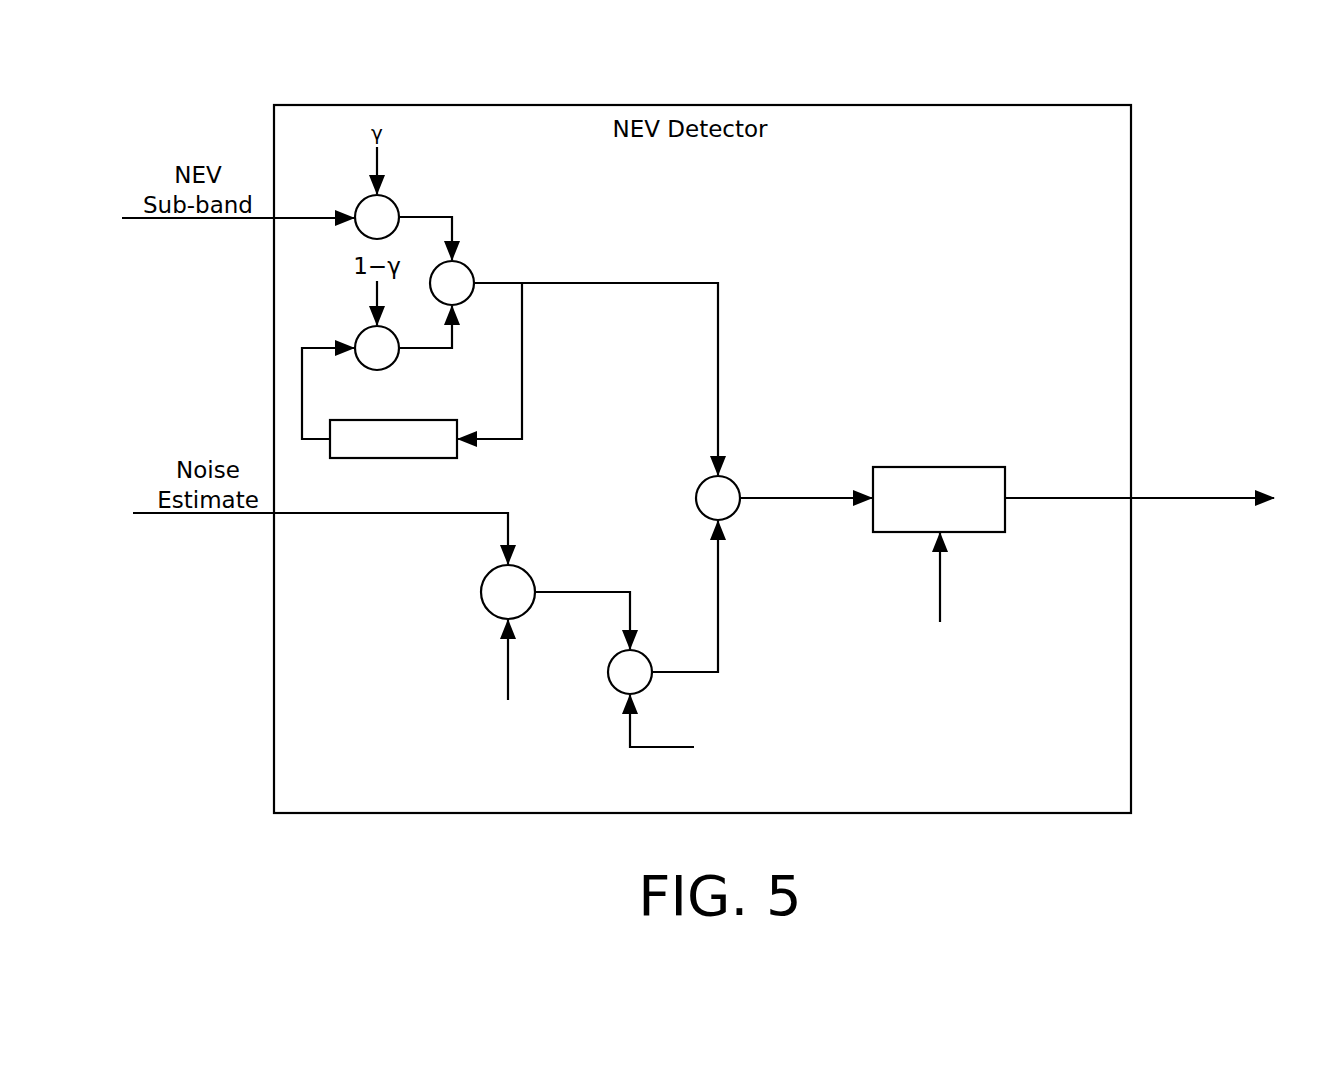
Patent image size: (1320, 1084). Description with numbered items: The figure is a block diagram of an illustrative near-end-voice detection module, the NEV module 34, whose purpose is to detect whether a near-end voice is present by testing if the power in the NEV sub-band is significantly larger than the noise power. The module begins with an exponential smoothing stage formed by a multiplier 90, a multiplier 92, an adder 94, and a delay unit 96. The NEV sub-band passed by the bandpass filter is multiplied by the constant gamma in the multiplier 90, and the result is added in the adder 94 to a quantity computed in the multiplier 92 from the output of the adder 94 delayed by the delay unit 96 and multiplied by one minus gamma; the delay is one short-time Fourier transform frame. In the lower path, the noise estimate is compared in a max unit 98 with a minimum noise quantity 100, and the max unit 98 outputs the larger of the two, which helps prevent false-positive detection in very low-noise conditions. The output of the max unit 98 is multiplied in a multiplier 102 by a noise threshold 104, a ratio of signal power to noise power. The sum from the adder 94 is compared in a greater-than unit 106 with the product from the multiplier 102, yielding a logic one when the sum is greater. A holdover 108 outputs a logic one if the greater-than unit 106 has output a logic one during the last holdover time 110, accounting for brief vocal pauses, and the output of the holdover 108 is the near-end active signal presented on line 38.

The NEV module 34 is at (1196, 148).
The line 38 is at (1183, 504).
The multiplier 90 is at (402, 197).
The multiplier 92 is at (356, 330).
The adder 94 is at (476, 264).
The delay unit 96 is at (393, 439).
The max unit 98 is at (528, 568).
The minimum noise quantity 100 is at (506, 672).
The multiplier 102 is at (652, 653).
The noise threshold 104 is at (624, 744).
The greater-than unit 106 is at (740, 478).
The holdover 108 is at (939, 499).
The holdover time 110 is at (940, 585).